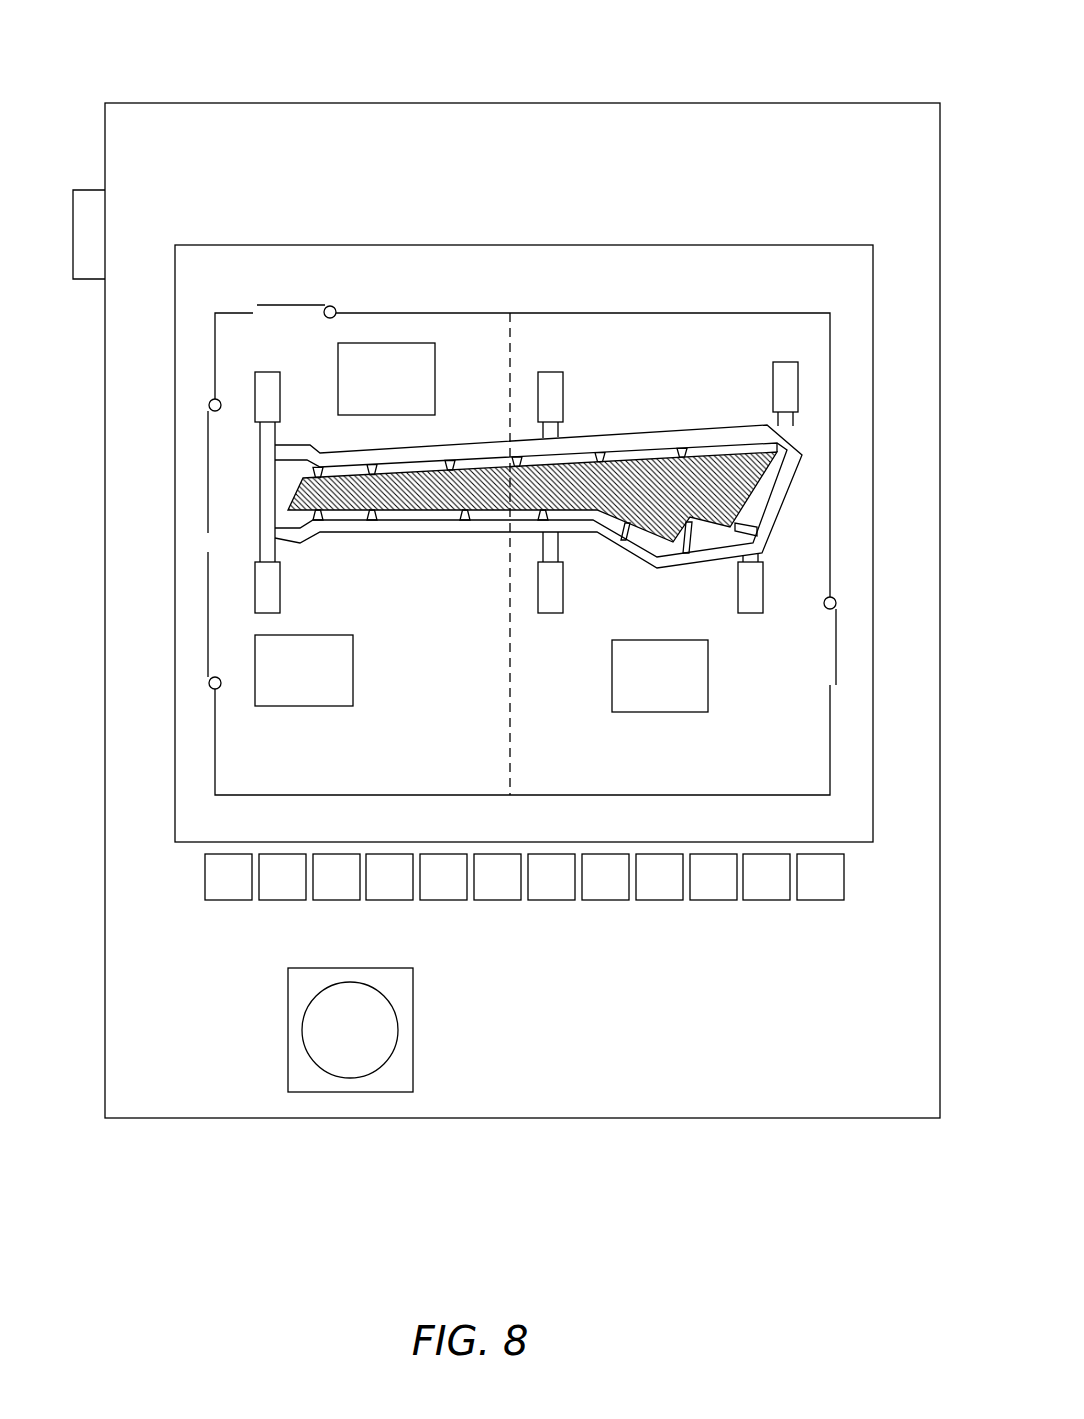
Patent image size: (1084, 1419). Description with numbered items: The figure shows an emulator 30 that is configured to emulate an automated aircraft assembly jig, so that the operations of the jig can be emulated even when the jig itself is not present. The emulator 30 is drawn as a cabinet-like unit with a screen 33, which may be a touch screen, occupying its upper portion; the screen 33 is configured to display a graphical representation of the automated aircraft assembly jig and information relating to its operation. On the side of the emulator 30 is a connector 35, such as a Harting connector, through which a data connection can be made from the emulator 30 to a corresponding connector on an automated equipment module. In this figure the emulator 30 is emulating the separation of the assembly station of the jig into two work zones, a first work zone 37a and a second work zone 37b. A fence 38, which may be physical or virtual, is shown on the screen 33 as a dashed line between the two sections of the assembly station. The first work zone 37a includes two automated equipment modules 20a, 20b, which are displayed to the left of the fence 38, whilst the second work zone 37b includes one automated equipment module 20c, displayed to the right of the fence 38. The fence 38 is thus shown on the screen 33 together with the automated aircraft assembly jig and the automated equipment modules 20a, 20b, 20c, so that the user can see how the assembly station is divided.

The emulator 30 is at (800, 88).
The screen 33 is at (420, 268).
The connector 35 is at (97, 200).
The fence 38 is at (512, 330).
The automated equipment module 20a is at (275, 682).
The automated equipment module 20b is at (357, 395).
The automated equipment module 20c is at (688, 688).
The first work zone 37a is at (309, 762).
The second work zone 37b is at (692, 770).